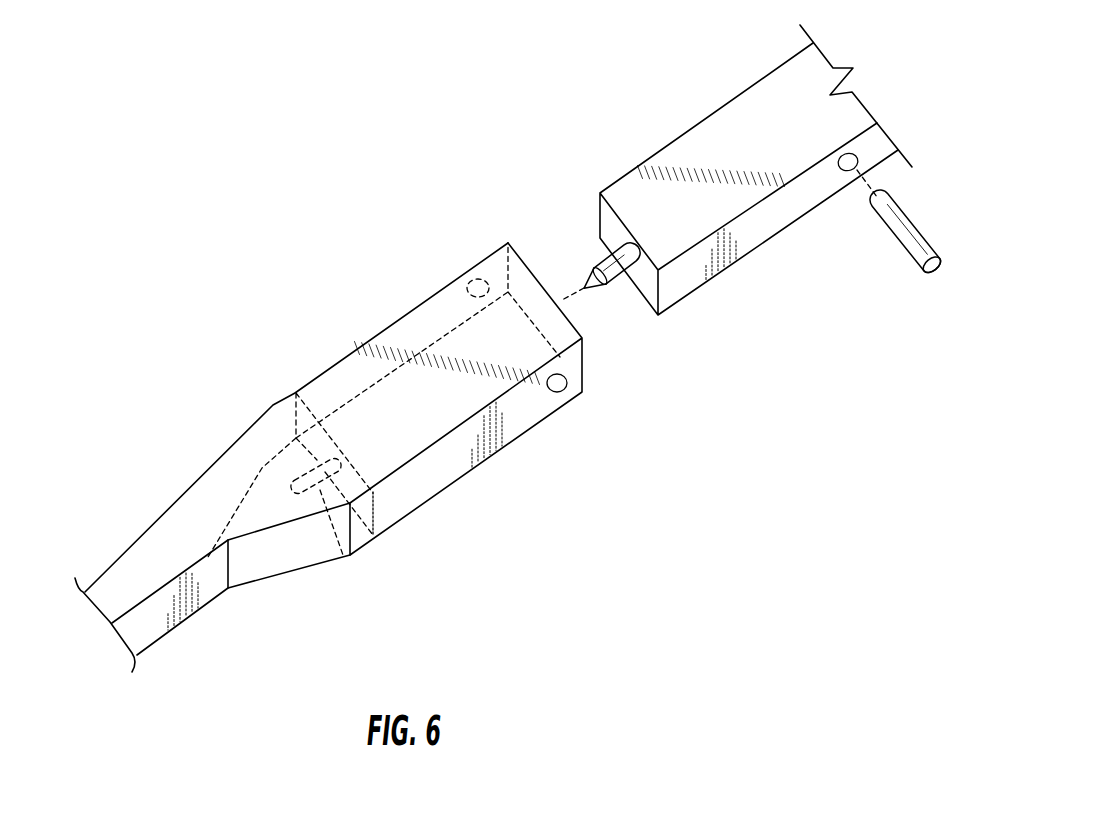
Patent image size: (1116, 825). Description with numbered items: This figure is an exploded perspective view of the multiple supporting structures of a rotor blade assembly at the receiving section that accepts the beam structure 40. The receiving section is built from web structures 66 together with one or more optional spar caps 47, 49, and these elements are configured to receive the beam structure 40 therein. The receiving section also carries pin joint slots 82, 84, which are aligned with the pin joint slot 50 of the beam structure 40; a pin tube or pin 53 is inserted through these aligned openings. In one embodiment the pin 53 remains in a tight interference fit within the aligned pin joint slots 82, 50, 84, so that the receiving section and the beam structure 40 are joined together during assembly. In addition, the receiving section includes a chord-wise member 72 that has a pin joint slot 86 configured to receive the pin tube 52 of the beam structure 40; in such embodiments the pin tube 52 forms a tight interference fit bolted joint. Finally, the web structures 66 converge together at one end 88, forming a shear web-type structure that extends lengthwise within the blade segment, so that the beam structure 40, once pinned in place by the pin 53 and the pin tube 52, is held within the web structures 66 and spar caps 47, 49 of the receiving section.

The beam structure 40 is at (752, 95).
The spar cap 47 is at (453, 410).
The spar cap 49 is at (313, 543).
The pin joint slot 50 is at (847, 170).
The pin tube 52 is at (598, 260).
The pin 53 is at (908, 245).
The web structures 66 is at (348, 375).
The chord-wise member 72 is at (290, 420).
The pin joint slot 82 is at (560, 393).
The pin joint slot 84 is at (478, 277).
The pin joint slot 86 is at (350, 557).
The end 88 is at (92, 636).